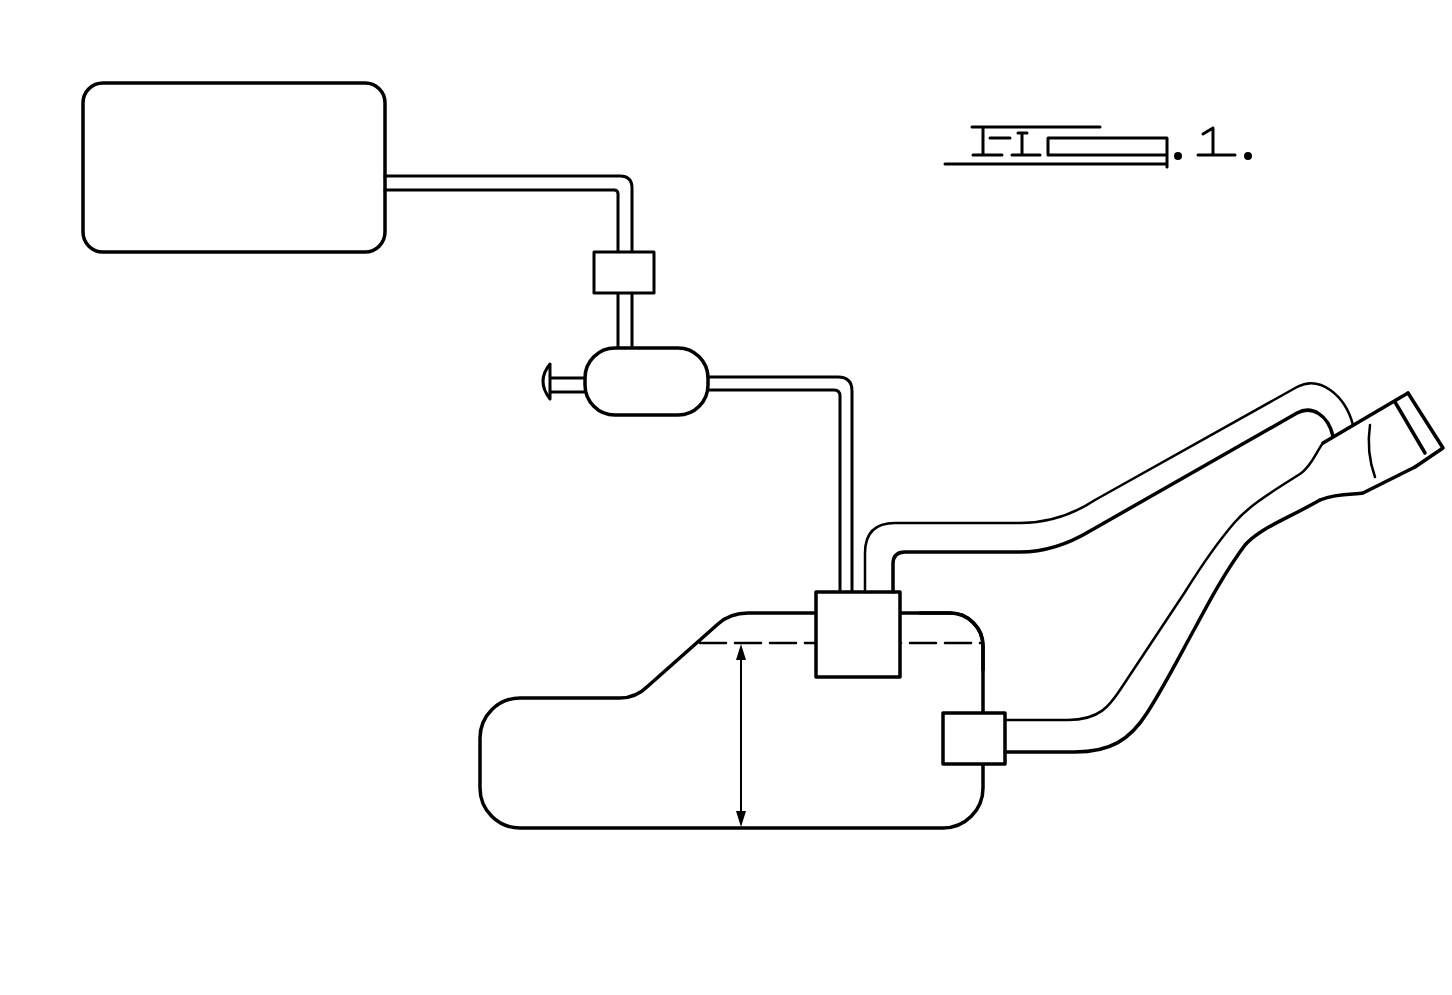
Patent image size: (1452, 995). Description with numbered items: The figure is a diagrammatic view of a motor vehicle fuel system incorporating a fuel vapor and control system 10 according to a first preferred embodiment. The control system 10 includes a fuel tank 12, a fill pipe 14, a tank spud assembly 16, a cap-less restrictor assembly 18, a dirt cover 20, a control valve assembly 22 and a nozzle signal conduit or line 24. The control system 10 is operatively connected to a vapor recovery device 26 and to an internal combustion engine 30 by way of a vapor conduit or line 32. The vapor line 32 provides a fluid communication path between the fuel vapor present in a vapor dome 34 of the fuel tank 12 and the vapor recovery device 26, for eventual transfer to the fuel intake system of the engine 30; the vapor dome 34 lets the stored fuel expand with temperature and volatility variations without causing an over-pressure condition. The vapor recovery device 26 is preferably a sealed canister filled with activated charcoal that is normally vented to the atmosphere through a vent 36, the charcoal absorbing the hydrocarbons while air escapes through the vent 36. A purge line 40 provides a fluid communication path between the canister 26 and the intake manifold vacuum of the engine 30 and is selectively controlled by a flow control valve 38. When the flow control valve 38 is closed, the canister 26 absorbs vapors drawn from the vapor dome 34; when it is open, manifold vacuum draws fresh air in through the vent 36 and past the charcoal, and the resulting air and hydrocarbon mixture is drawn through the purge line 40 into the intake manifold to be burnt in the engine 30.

The fuel vapor and control system 10 is at (1076, 393).
The fuel tank 12 is at (547, 810).
The fill pipe 14 is at (1195, 628).
The tank spud assembly 16 is at (995, 718).
The cap-less restrictor assembly 18 is at (1390, 455).
The dirt cover 20 is at (1408, 392).
The control valve assembly 22 is at (825, 601).
The nozzle signal conduit or line 24 is at (1133, 490).
The vapor recovery device 26 is at (640, 397).
The internal combustion engine 30 is at (368, 103).
The vapor conduit or line 32 is at (848, 428).
The vapor dome 34 is at (953, 628).
The vent 36 is at (540, 384).
The flow control valve 38 is at (640, 266).
The purge line 40 is at (495, 178).